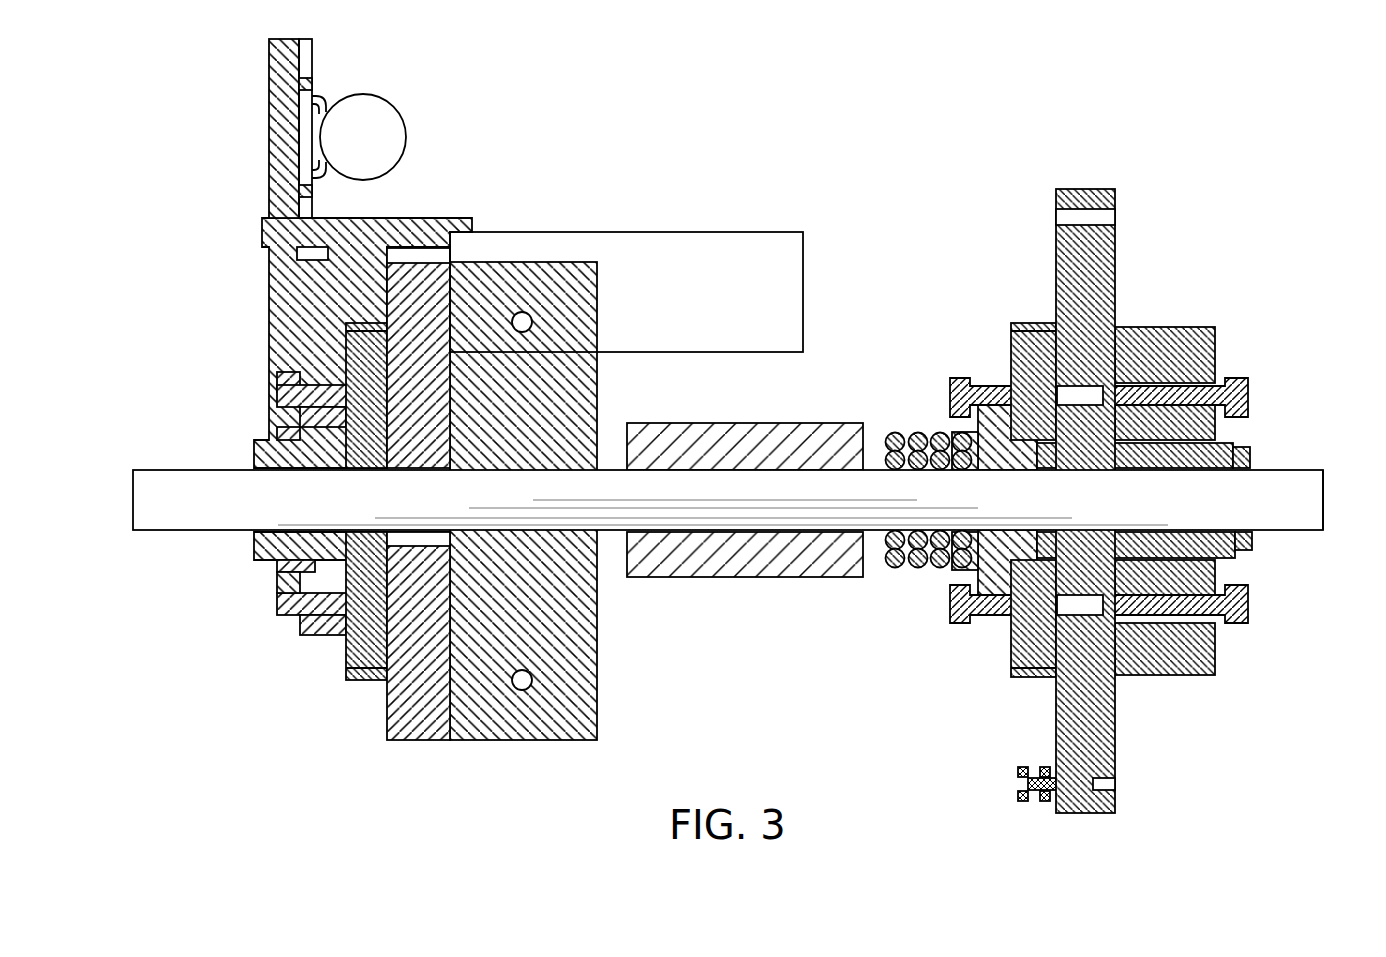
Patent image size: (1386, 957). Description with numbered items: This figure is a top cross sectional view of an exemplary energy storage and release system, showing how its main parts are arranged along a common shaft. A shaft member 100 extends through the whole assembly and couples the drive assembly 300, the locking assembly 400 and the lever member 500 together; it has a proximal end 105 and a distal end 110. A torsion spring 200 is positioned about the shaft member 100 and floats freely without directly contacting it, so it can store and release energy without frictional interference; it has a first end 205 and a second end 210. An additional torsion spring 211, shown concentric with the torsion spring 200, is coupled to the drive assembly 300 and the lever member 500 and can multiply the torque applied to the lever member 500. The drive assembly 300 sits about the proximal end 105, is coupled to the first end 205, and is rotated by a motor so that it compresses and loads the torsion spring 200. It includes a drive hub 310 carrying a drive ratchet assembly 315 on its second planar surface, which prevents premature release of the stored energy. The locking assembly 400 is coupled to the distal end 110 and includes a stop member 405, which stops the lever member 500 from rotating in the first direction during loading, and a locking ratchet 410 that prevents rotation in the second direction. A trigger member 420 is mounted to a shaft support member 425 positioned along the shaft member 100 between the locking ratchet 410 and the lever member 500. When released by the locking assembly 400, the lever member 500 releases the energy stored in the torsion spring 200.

The shaft member 100 is at (1048, 509).
The proximal end 105 is at (1323, 500).
The distal end 110 is at (133, 476).
The torsion spring 200 is at (884, 440).
The first end 205 is at (958, 572).
The second end 210 is at (888, 567).
The additional torsion spring 211 is at (882, 458).
The drive assembly 300 is at (1322, 377).
The drive hub 310 is at (1116, 268).
The drive ratchet assembly 315 is at (1025, 335).
The locking assembly 400 is at (260, 652).
The stop member 405 is at (681, 203).
The locking ratchet 410 is at (361, 682).
The trigger member 420 is at (380, 97).
The shaft support member 425 is at (418, 262).
The lever member 500 is at (684, 578).